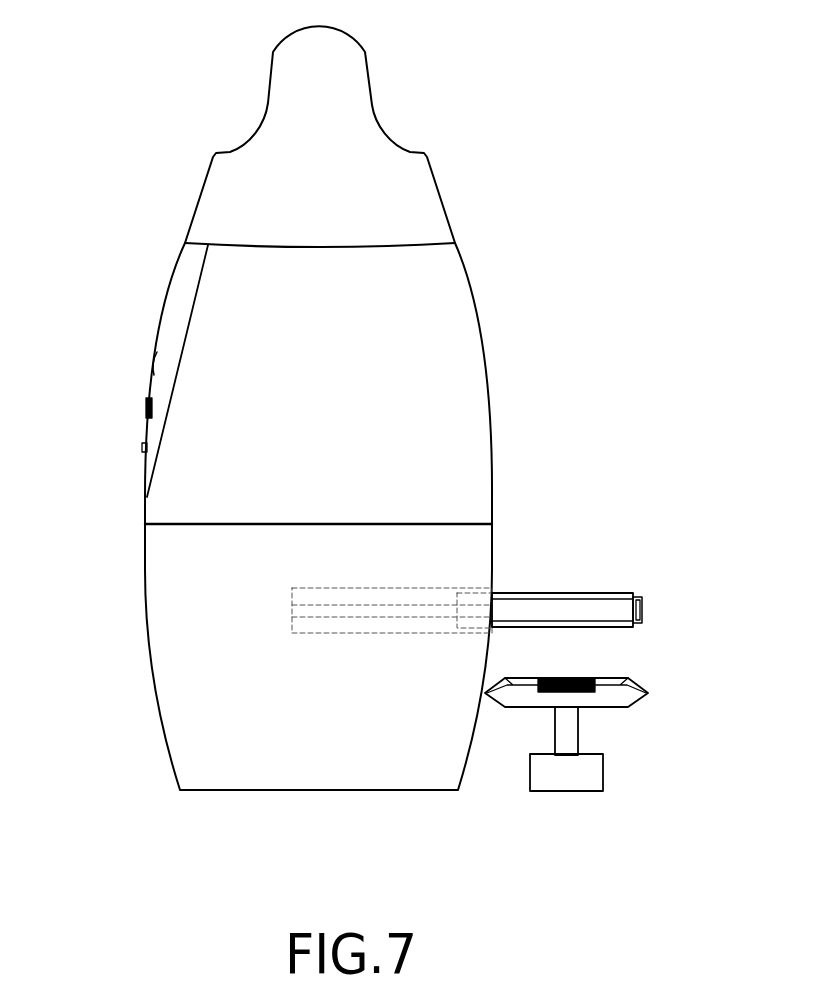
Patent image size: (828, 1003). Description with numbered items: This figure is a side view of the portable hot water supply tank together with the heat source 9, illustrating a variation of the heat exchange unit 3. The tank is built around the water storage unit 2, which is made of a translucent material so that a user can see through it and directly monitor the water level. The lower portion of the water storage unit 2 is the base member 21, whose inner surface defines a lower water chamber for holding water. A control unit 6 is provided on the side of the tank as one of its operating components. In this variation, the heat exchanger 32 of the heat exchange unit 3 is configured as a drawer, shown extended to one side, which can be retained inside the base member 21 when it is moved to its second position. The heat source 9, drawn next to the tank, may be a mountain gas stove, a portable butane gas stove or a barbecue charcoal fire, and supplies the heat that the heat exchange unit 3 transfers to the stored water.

The water storage unit 2 is at (490, 365).
The control unit 6 is at (158, 343).
The base member 21 is at (152, 660).
The heat exchange unit 3 is at (467, 548).
The heat exchanger 32 is at (608, 590).
The heat source 9 is at (605, 775).